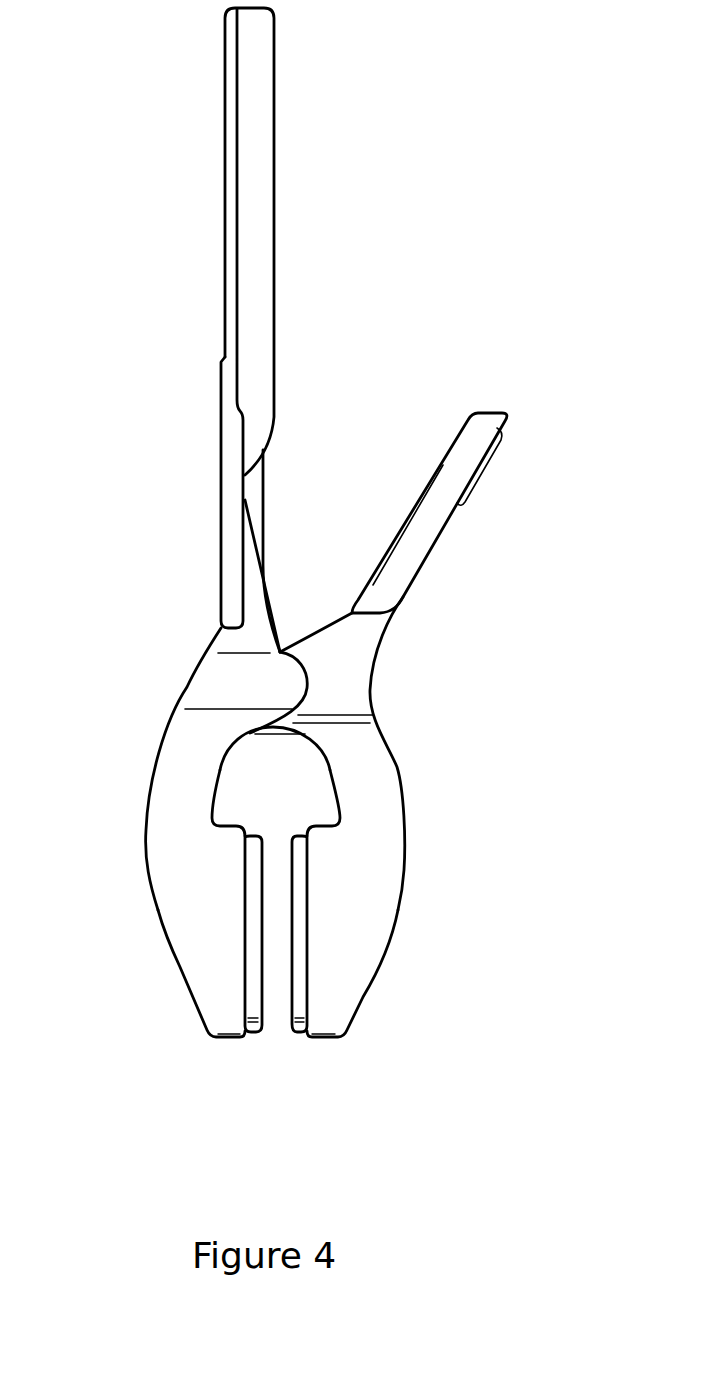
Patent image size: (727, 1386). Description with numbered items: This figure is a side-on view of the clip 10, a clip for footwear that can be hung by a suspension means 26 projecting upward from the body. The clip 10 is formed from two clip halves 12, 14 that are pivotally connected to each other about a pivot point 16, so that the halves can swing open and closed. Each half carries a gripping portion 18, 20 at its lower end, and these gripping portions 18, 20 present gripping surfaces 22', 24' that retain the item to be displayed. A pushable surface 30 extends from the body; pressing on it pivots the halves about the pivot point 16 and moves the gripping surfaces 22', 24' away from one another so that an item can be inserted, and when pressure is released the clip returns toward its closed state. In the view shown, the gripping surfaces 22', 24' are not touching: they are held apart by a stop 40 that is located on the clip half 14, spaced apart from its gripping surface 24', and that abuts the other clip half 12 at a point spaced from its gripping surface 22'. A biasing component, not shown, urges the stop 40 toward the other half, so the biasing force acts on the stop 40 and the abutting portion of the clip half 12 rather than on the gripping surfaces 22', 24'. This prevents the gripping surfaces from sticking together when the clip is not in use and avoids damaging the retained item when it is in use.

The clip 10 is at (388, 75).
The clip half 12 is at (146, 813).
The clip half 14 is at (397, 767).
The pivot point 16 is at (282, 682).
The gripping portion 18 is at (190, 997).
The gripping portion 20 is at (363, 1000).
The gripping surface 22' is at (246, 1002).
The gripping surface 24' is at (303, 1002).
The suspension means 26 is at (224, 80).
The pushable surface 30 is at (487, 467).
The stop 40 is at (277, 740).